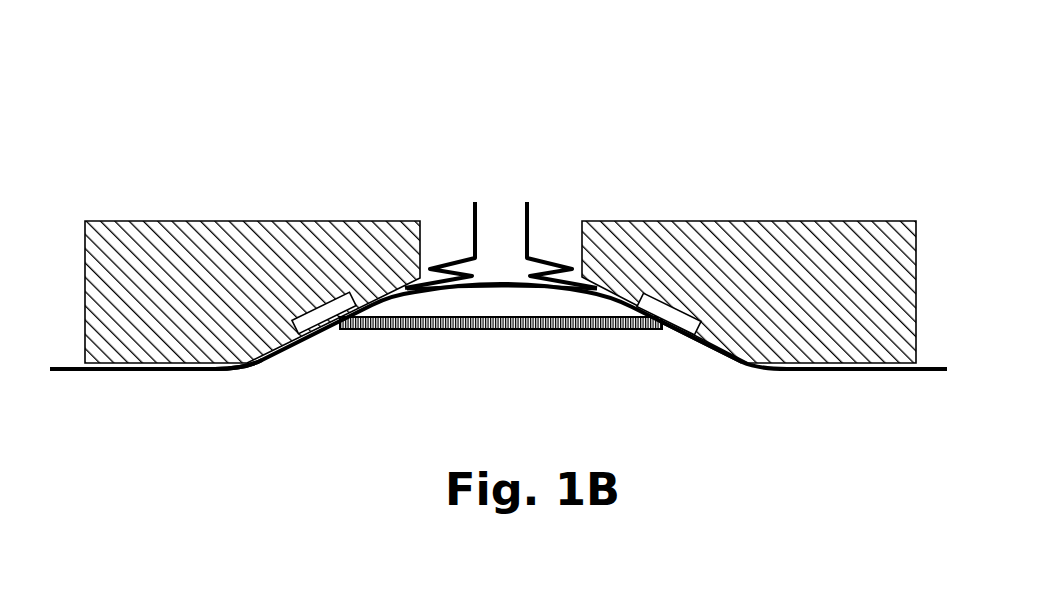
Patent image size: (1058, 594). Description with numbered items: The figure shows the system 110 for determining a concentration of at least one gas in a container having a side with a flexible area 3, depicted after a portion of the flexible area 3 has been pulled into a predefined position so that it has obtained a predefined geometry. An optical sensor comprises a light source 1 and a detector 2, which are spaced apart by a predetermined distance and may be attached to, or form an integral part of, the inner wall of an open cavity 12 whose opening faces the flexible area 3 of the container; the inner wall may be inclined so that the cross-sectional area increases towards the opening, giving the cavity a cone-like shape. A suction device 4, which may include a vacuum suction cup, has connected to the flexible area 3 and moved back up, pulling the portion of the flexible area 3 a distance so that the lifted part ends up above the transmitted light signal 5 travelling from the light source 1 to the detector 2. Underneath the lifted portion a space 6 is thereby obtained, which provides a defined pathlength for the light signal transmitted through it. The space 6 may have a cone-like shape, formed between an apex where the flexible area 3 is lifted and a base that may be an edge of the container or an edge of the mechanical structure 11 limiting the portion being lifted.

The system 110 is at (148, 96).
The light source 1 is at (290, 282).
The detector 2 is at (690, 280).
The flexible area 3 is at (170, 392).
The suction device 4 is at (558, 194).
The transmitted light signal 5 is at (452, 340).
The space 6 is at (596, 352).
The mechanical structure 11 is at (252, 383).
The open cavity 12 is at (697, 368).